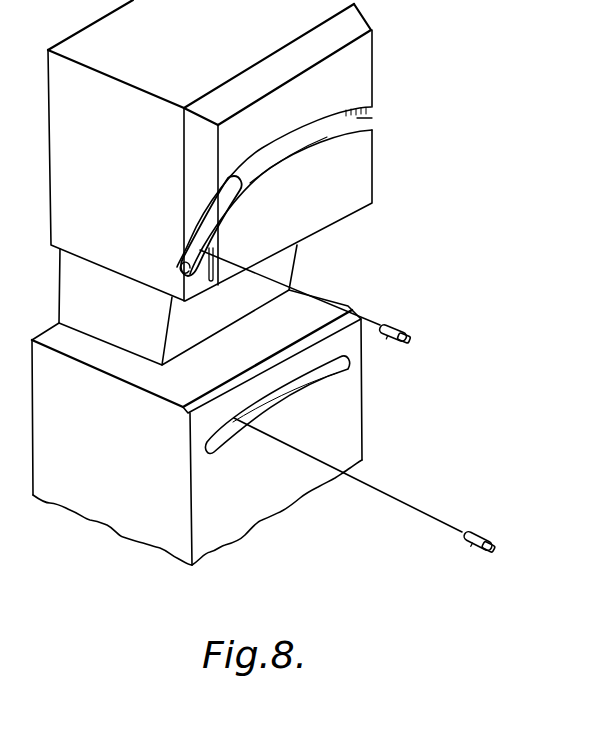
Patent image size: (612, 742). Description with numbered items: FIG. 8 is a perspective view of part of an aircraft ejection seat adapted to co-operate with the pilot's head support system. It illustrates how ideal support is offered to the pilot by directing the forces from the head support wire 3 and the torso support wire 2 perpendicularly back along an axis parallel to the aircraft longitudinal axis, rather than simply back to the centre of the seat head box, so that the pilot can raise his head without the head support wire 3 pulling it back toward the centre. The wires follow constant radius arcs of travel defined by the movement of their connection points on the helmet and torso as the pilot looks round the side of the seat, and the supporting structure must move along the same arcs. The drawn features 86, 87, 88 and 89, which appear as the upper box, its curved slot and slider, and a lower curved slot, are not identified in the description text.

The upper housing 86 is at (372, 45).
The arcuate slot 87 is at (372, 118).
The slider in slot 88 is at (180, 254).
The head support wire 3 is at (410, 338).
The arcuate slot in base 89 is at (328, 370).
The torso support wire 2 is at (495, 545).